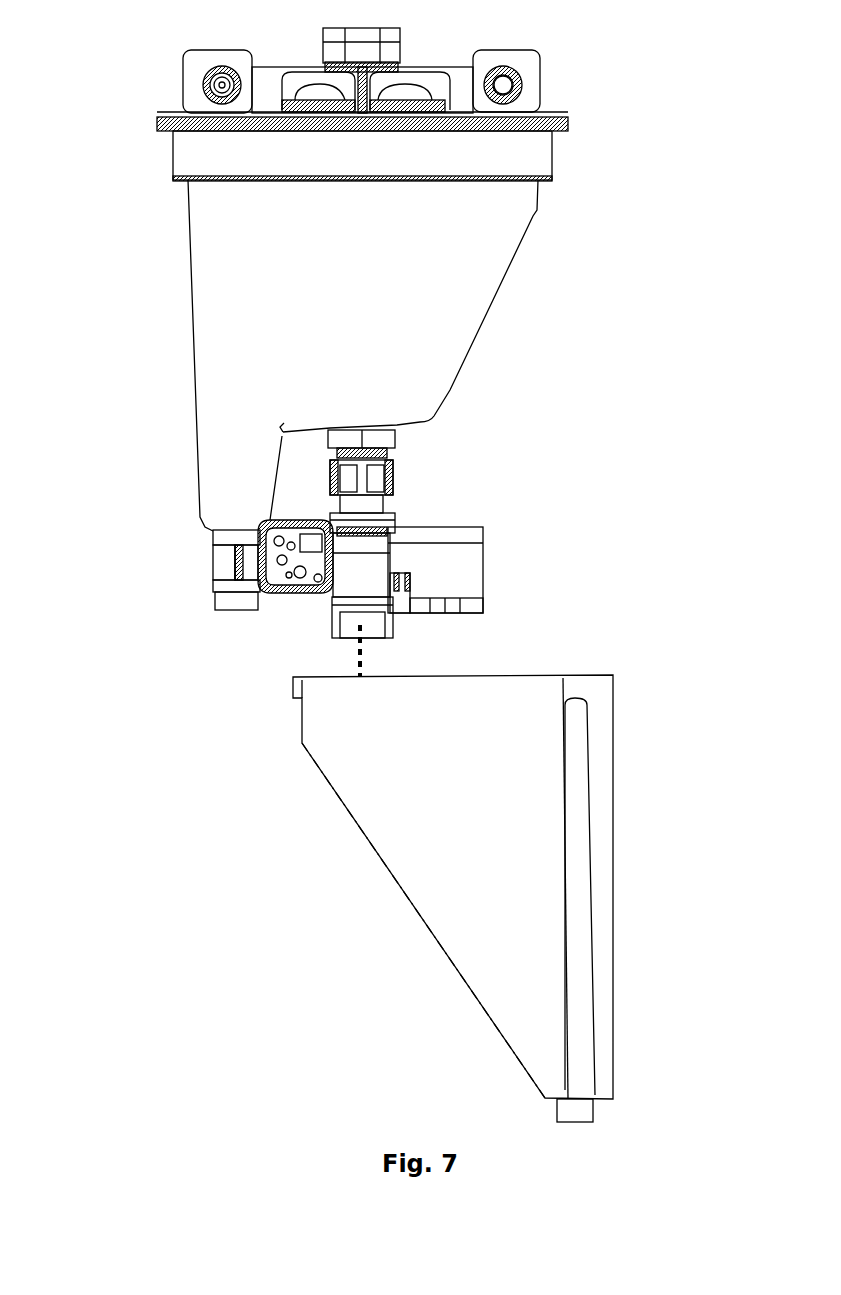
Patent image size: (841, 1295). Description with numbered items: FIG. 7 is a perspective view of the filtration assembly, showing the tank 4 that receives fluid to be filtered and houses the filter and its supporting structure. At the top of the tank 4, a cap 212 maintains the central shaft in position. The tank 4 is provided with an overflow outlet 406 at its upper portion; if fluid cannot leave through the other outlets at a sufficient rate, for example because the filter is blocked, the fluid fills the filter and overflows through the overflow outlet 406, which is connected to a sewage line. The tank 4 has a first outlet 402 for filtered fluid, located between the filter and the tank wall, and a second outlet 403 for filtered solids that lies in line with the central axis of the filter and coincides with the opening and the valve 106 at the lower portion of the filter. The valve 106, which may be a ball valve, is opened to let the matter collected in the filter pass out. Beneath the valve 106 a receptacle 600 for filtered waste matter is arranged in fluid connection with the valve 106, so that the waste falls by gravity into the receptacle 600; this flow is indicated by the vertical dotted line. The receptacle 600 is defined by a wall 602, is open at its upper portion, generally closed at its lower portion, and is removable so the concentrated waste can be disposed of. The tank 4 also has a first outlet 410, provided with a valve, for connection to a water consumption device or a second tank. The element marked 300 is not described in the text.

The cap 212 is at (330, 42).
The fastener 300 is at (213, 92).
The overflow outlet 406 is at (520, 83).
The tank 4 is at (500, 283).
The second outlet 403 is at (397, 434).
The valve 106 is at (479, 568).
The first outlet 410 is at (214, 562).
The first outlet 402 is at (219, 540).
The receptacle 600 is at (613, 732).
The wall 602 is at (345, 802).